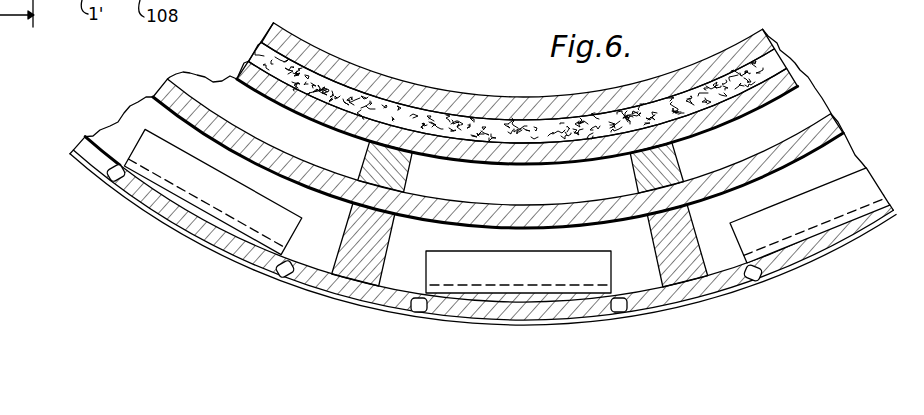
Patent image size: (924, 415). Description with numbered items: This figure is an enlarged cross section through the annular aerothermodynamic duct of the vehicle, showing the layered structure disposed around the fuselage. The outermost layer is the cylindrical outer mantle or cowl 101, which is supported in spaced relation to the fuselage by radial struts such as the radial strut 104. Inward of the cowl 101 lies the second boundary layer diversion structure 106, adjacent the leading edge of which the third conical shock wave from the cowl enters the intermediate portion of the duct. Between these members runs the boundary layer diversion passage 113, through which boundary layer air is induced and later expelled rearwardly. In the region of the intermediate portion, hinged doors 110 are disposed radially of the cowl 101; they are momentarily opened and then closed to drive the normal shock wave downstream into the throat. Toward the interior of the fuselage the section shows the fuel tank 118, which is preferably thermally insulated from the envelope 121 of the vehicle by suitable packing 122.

The cowl 101 is at (677, 303).
The radial strut 104 is at (352, 240).
The second boundary layer diversion structure 106 is at (781, 153).
The hinged door 110 is at (288, 221).
The boundary layer diversion passage 113 is at (304, 144).
The fuel tank 118 is at (765, 32).
The envelope 121 is at (792, 81).
The packing 122 is at (779, 60).